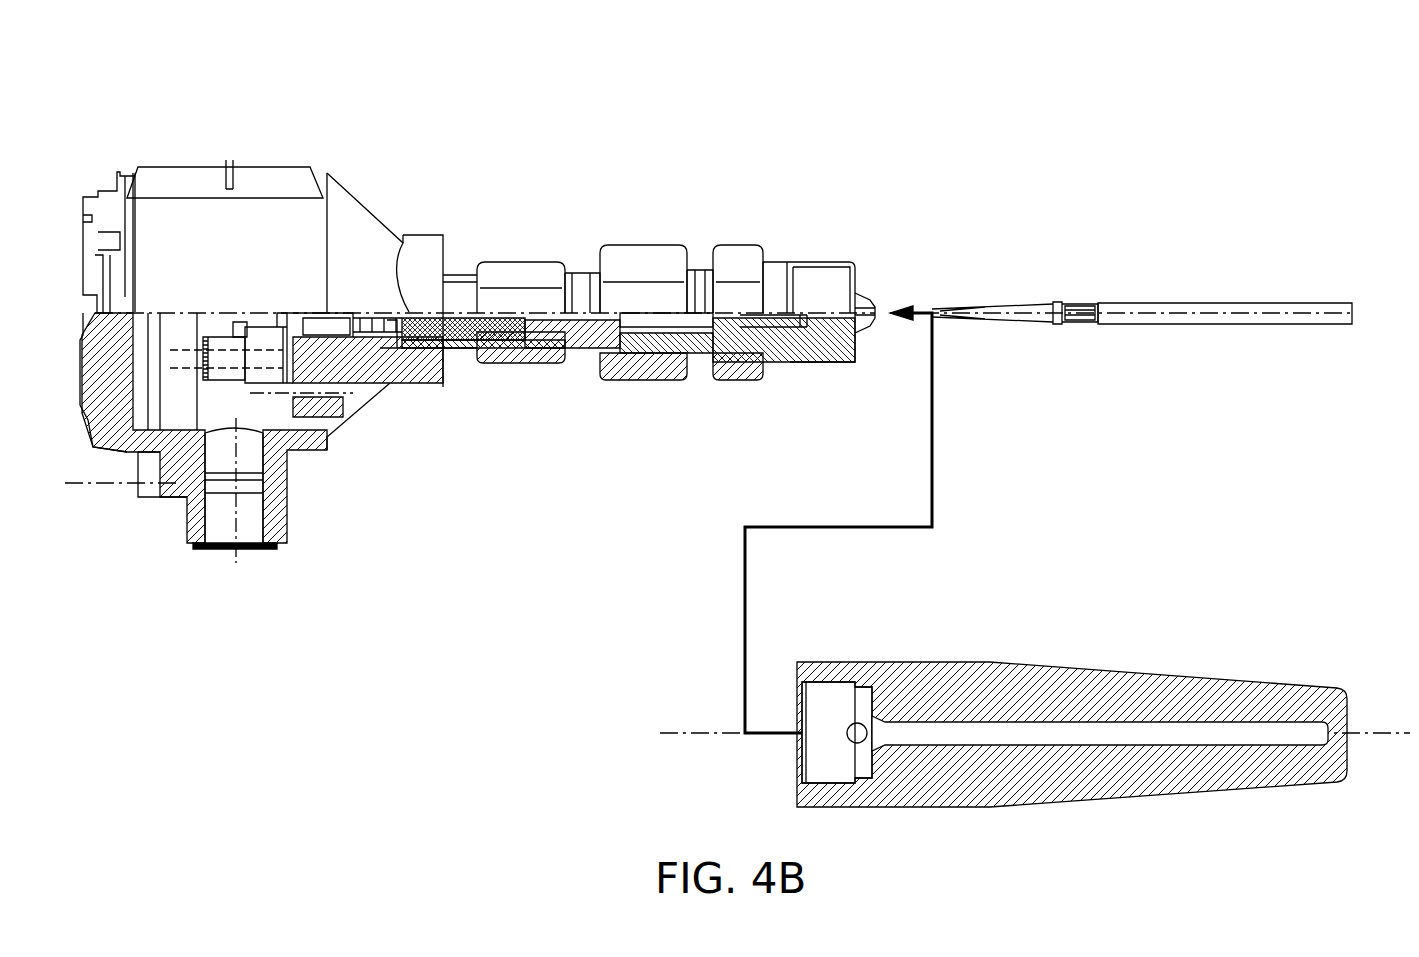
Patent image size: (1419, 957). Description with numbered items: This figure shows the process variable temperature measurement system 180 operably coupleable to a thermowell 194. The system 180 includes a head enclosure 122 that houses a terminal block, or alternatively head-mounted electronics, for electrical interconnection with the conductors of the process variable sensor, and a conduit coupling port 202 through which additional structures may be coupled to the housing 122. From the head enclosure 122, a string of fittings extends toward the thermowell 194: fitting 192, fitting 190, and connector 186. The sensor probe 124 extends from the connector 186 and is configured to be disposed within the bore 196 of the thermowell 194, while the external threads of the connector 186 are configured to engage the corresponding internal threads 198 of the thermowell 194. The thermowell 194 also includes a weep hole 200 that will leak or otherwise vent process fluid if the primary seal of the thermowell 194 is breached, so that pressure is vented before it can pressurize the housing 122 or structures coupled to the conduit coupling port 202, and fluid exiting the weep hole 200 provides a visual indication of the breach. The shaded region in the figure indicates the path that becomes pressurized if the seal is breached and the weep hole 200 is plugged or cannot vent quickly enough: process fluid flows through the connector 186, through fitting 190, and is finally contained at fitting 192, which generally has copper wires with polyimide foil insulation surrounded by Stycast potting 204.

The process variable temperature measurement system 180 is at (708, 387).
The head enclosure 122 is at (358, 192).
The fitting 192 is at (520, 262).
The fitting 190 is at (640, 245).
The connector 186 is at (738, 382).
The sensor probe 124 is at (1213, 303).
The Stycast potting 204 is at (462, 348).
The conduit coupling port 202 is at (203, 512).
The thermowell 194 is at (1035, 728).
The bore 196 is at (1285, 745).
The internal threads 198 is at (828, 782).
The weep hole 200 is at (868, 724).